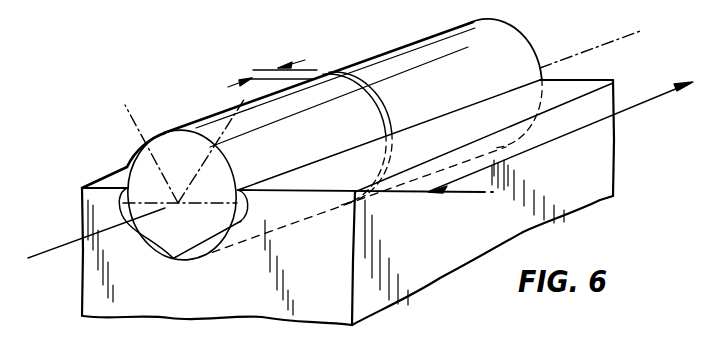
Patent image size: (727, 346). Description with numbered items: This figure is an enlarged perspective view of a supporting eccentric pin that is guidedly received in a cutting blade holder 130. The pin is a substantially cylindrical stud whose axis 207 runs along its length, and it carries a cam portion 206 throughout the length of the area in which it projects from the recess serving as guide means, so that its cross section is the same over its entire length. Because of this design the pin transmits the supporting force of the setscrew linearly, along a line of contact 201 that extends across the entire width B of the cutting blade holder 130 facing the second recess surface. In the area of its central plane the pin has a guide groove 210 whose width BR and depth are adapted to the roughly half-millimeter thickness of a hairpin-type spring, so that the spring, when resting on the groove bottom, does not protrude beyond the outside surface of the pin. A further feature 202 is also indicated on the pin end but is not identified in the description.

The cutting blade holder 130 is at (441, 278).
The line of contact 201 is at (210, 147).
The groove bottom contour 202 is at (169, 258).
The cam portion 206 is at (399, 76).
The axis of the supporting eccentric pin 207 is at (57, 247).
The guide groove 210 is at (358, 82).
The width of the cutting blade holder B is at (561, 138).
The width of the guide groove BR is at (253, 70).